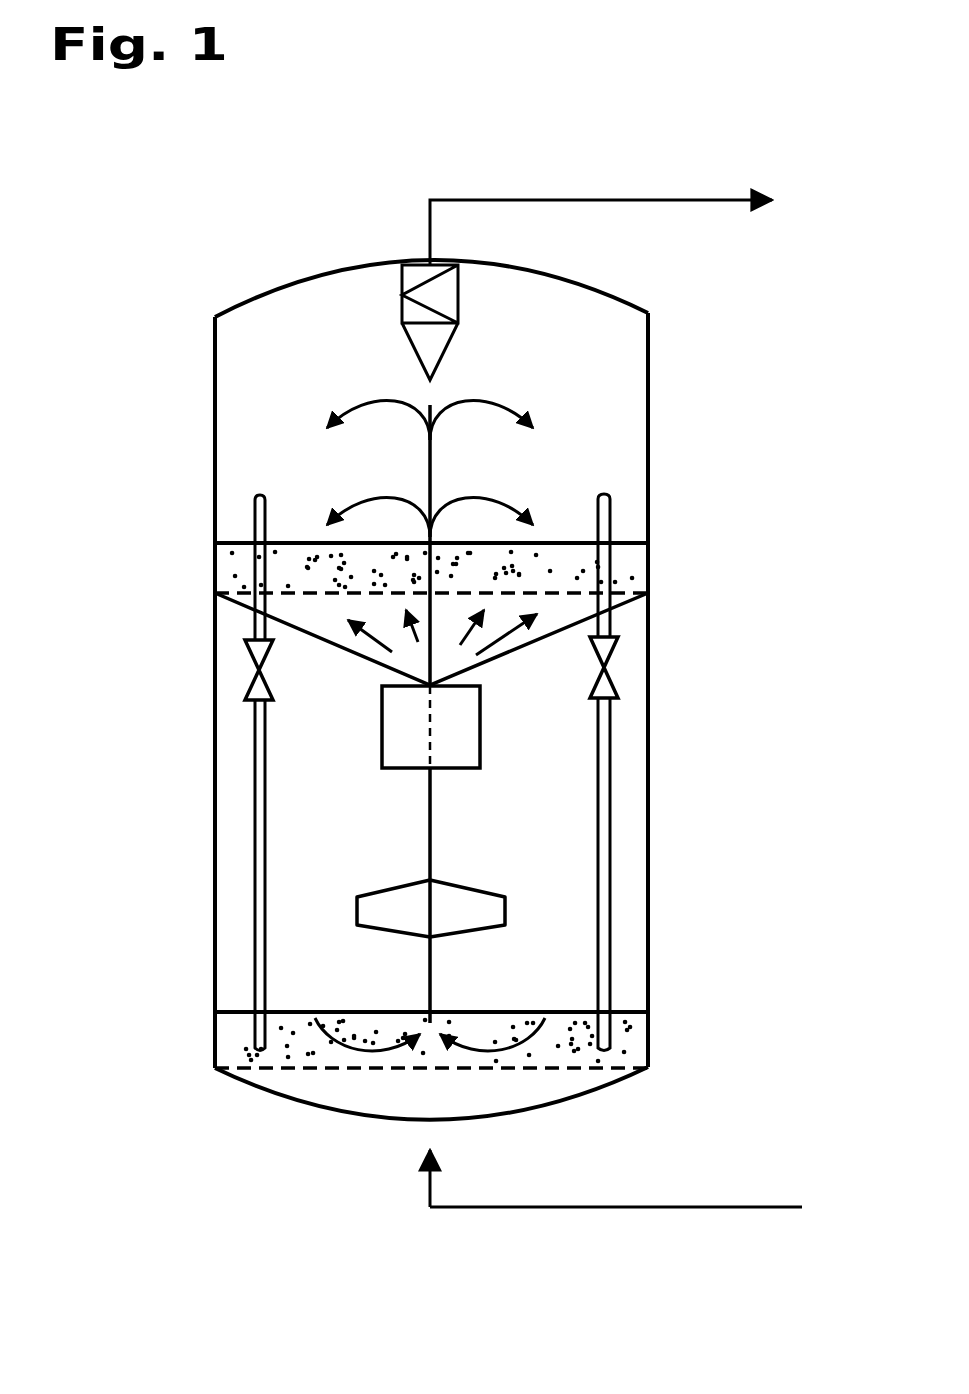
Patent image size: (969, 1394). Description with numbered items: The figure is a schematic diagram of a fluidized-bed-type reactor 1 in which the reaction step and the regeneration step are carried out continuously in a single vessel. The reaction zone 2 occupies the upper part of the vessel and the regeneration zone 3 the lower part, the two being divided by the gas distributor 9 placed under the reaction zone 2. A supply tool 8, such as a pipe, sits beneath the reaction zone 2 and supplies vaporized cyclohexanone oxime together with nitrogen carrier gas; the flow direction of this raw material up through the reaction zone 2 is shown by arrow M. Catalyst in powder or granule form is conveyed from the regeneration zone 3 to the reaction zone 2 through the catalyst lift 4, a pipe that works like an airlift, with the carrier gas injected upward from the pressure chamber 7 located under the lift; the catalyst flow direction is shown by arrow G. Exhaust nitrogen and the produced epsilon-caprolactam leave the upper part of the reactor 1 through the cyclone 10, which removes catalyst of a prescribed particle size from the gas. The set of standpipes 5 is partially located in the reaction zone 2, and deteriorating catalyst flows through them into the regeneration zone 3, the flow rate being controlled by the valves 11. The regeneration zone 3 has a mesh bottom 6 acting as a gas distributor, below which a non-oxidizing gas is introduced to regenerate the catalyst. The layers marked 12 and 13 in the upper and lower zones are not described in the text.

The reactor 1 is at (170, 349).
The reaction zone 2 is at (198, 512).
The regeneration zone 3 is at (203, 941).
The catalyst lift 4 is at (432, 837).
The standpipes 5 is at (253, 777).
The bottom 6 is at (553, 1070).
The pressure chamber 7 is at (505, 910).
The supply tool 8 is at (480, 735).
The gas distributor 9 is at (553, 590).
The cyclone 10 is at (402, 280).
The valves 11 is at (245, 660).
The upper powder layer 12 is at (233, 570).
The lower powder layer 13 is at (228, 1044).
The arrow G is at (515, 490).
The arrow M is at (553, 632).